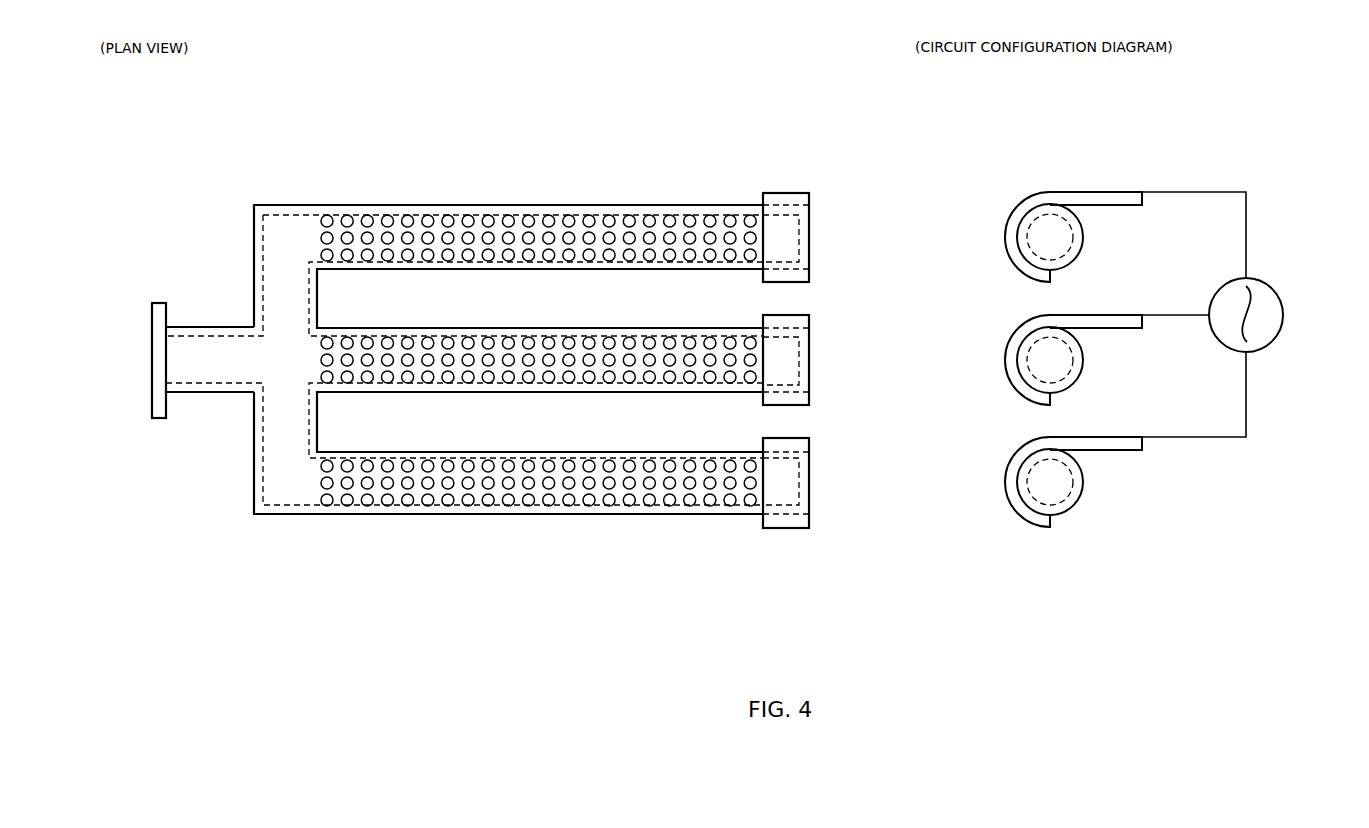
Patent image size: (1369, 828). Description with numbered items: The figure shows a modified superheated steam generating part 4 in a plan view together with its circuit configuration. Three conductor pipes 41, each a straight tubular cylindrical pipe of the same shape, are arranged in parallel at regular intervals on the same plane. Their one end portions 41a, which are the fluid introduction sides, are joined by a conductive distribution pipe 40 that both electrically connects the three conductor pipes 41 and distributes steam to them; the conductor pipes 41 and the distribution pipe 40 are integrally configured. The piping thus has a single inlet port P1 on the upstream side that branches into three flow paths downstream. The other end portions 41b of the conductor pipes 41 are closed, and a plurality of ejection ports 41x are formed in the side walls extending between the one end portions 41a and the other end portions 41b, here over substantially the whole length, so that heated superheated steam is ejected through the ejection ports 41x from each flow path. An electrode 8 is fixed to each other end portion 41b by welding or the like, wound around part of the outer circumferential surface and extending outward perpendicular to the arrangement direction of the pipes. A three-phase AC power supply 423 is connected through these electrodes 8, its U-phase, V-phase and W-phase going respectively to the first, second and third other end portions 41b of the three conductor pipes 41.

The superheated steam generating part 4 is at (380, 128).
The distribution pipe 40 is at (210, 327).
The inlet port P1 is at (150, 360).
The conductor pipe 41 is at (566, 204).
The one end portion 41a is at (323, 200).
The other end portion 41b is at (758, 195).
The ejection port 41x is at (487, 218).
The electrode 8 is at (786, 192).
The AC power supply 423 is at (1283, 316).